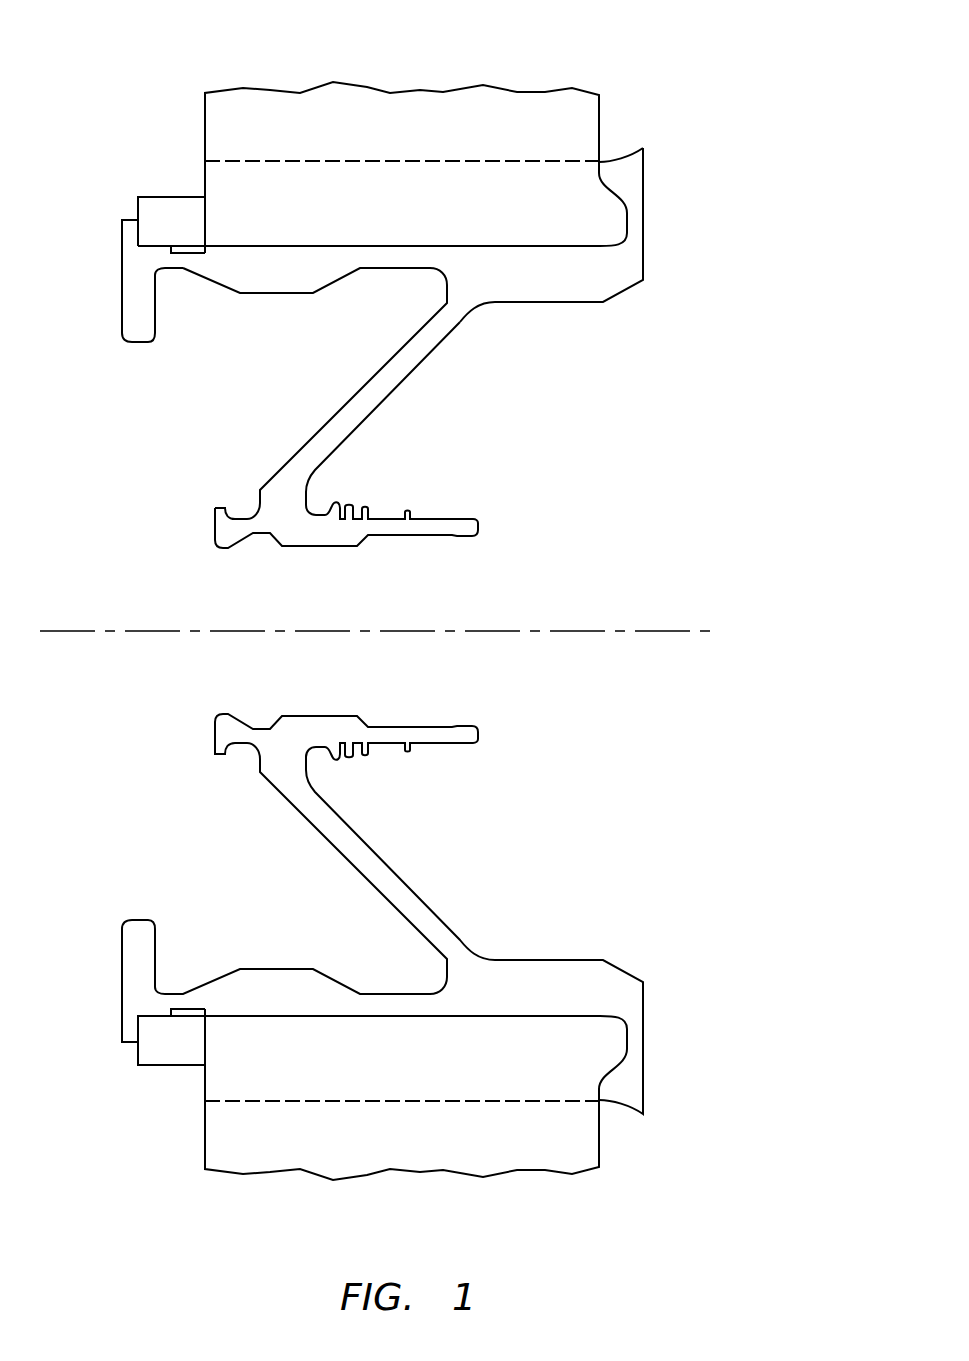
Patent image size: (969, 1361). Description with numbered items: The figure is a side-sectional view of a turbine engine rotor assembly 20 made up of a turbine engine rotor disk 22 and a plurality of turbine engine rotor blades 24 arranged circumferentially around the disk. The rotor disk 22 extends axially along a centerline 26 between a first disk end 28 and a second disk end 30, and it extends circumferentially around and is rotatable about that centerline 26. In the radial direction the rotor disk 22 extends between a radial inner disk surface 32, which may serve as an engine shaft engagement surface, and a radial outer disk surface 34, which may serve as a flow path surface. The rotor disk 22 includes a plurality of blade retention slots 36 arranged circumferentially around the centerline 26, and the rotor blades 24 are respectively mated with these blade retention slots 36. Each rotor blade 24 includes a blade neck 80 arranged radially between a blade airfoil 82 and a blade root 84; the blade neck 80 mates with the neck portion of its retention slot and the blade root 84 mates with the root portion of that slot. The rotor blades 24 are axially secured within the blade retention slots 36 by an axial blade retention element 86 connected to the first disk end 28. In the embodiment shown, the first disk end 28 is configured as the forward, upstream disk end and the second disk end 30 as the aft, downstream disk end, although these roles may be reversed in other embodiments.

The turbine engine rotor assembly 20 is at (401, 618).
The turbine engine rotor disk 22 is at (372, 599).
The turbine engine rotor blades 24 is at (390, 621).
The centerline 26 is at (700, 632).
The first disk end 28 is at (138, 357).
The second disk end 30 is at (634, 304).
The radial inner disk surface 32 is at (322, 548).
The radial outer disk surface 34 is at (618, 155).
The blade retention slots 36 is at (630, 219).
The blade neck 80 is at (226, 165).
The blade airfoil 82 is at (220, 118).
The blade root 84 is at (235, 208).
The axial blade retention element 86 is at (128, 207).